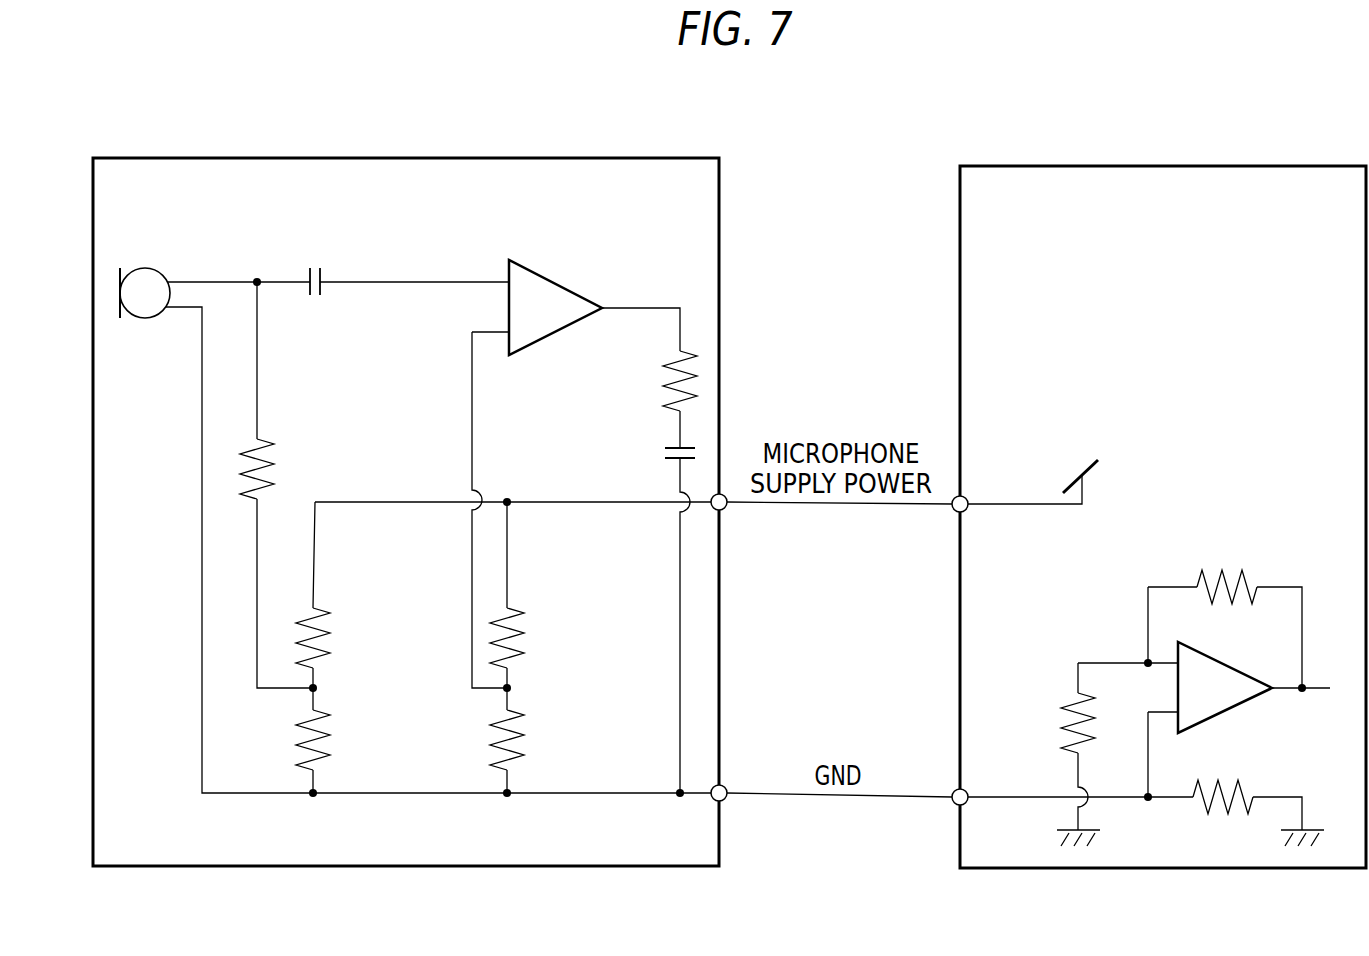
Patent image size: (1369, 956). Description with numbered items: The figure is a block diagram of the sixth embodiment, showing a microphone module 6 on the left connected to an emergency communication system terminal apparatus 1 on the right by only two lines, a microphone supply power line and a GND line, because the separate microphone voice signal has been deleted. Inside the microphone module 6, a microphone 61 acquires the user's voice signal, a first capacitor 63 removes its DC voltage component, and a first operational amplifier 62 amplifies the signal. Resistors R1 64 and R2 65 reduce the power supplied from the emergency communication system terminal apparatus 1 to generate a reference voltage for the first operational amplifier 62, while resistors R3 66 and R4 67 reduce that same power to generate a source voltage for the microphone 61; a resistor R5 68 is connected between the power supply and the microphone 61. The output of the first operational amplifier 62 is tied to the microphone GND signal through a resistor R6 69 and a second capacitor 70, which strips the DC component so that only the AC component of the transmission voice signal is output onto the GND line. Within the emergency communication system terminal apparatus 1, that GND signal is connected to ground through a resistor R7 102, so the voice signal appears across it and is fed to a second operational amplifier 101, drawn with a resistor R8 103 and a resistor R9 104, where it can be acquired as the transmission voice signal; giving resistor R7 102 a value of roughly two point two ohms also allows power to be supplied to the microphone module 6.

The emergency communication system terminal apparatus 1 is at (1163, 165).
The microphone module 6 is at (410, 157).
The microphone 61 is at (146, 268).
The first operational amplifier 62 is at (557, 283).
The first capacitor 63 is at (317, 266).
The resistor R1 64 is at (520, 632).
The resistor R2 65 is at (520, 732).
The resistor R3 66 is at (326, 632).
The resistor R4 67 is at (326, 732).
The resistor R5 68 is at (268, 462).
The resistor R6 69 is at (668, 392).
The second capacitor 70 is at (663, 455).
The second operational amplifier 101 is at (1227, 659).
The resistor R7 102 is at (1240, 790).
The resistor R8 103 is at (1243, 578).
The resistor R9 104 is at (1068, 730).